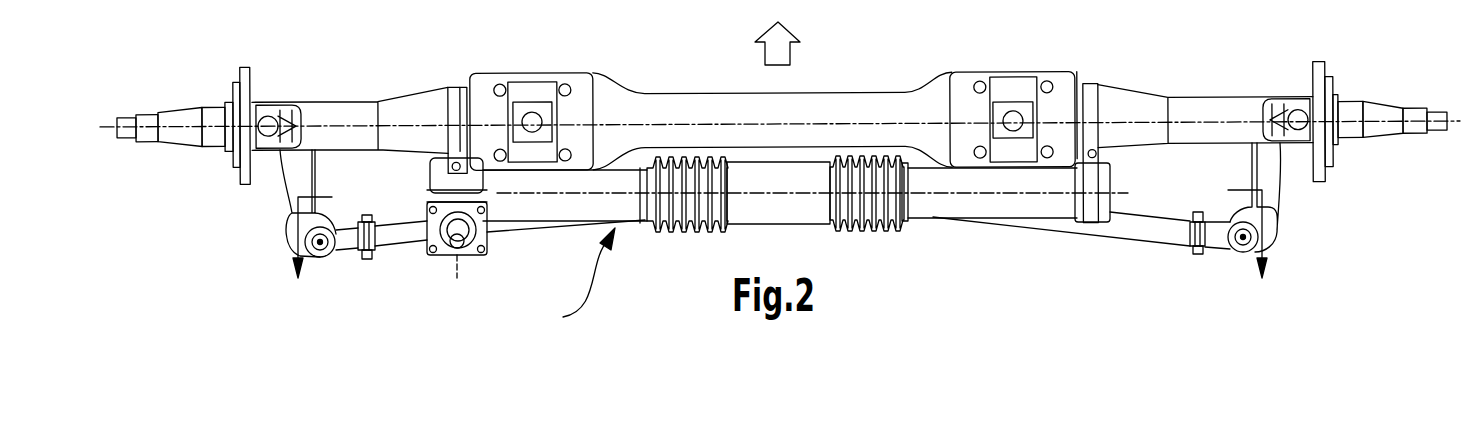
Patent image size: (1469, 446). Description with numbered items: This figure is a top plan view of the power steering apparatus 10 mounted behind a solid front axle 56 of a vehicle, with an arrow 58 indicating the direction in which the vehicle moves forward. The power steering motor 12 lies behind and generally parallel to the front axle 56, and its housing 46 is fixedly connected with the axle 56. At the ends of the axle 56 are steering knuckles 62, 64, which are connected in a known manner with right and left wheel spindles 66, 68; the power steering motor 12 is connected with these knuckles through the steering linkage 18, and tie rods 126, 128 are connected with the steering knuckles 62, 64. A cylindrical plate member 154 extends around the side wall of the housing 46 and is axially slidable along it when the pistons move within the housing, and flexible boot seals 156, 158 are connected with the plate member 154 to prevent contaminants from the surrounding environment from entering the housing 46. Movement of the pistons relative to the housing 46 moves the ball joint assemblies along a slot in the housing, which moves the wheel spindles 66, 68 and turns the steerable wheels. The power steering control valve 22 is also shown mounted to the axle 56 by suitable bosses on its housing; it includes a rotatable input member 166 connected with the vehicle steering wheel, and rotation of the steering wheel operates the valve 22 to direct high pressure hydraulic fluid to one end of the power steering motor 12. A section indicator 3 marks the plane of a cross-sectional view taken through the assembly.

The section line for FIG. 3 is at (779, 248).
The power steering apparatus 10 is at (589, 281).
The power steering motor 12 is at (945, 208).
The steering linkage 18 is at (1157, 240).
The power steering control valve 22 is at (440, 257).
The housing 46 is at (1022, 202).
The solid front axle 56 is at (700, 100).
The arrow 58 is at (780, 45).
The steering knuckle 62 is at (1292, 101).
The steering knuckle 64 is at (278, 103).
The right wheel spindle 66 is at (1379, 108).
The left wheel spindle 68 is at (182, 106).
The tie rod 126 is at (1119, 230).
The tie rod 128 is at (391, 233).
The cylindrical plate member 154 is at (766, 205).
The flexible boot seal 156 is at (877, 232).
The flexible boot seal 158 is at (692, 233).
The rotatable input member 166 is at (458, 248).